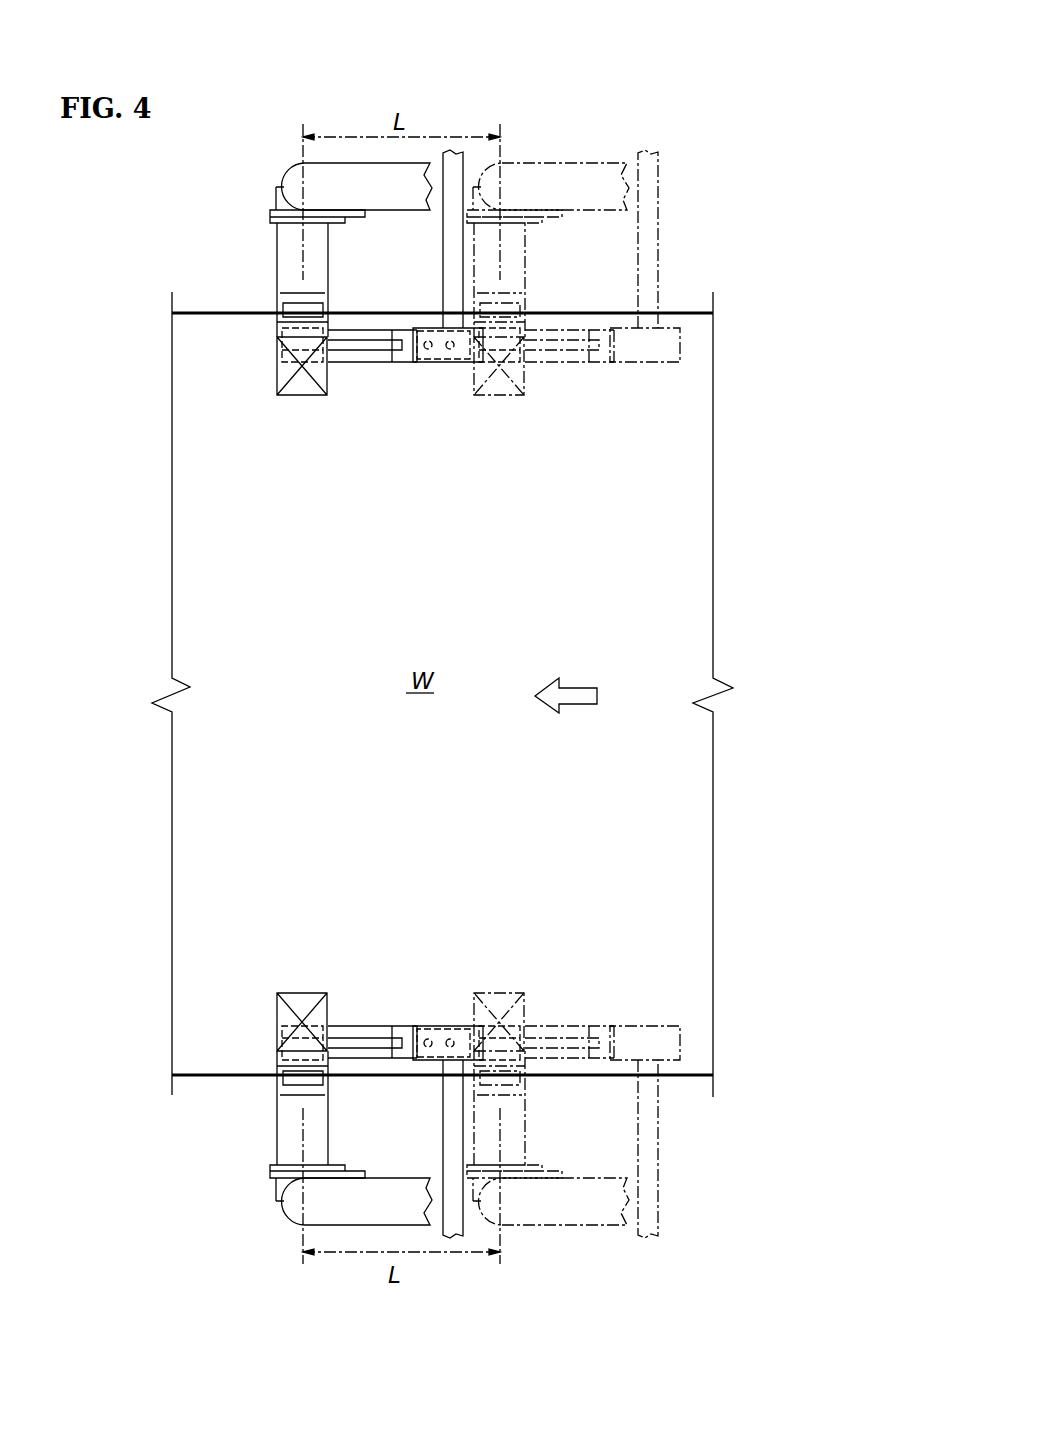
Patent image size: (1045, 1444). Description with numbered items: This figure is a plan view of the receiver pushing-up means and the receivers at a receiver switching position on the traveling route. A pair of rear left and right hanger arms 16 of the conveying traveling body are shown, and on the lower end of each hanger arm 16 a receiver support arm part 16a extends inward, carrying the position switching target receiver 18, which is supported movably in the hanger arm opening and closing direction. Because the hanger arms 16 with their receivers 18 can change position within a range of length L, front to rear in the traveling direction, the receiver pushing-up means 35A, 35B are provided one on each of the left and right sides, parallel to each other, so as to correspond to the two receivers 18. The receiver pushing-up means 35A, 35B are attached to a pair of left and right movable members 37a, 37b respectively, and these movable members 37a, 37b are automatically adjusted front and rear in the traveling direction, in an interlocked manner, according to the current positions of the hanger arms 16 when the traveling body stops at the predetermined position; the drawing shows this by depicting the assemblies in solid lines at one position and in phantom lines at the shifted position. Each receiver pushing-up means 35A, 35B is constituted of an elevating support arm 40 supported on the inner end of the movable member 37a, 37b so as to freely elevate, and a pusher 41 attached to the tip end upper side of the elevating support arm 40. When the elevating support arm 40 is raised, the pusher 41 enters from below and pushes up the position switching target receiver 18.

The hanger arm 16 is at (353, 177).
The receiver support arm part 16a is at (287, 255).
The position switching target receiver 18 is at (300, 387).
The elevating support arm 40 is at (378, 359).
The pusher 41 is at (277, 347).
The receiver pushing-up means 35A is at (352, 365).
The receiver pushing-up means 35B is at (357, 1024).
The movable member 37a is at (457, 167).
The movable member 37b is at (445, 1220).